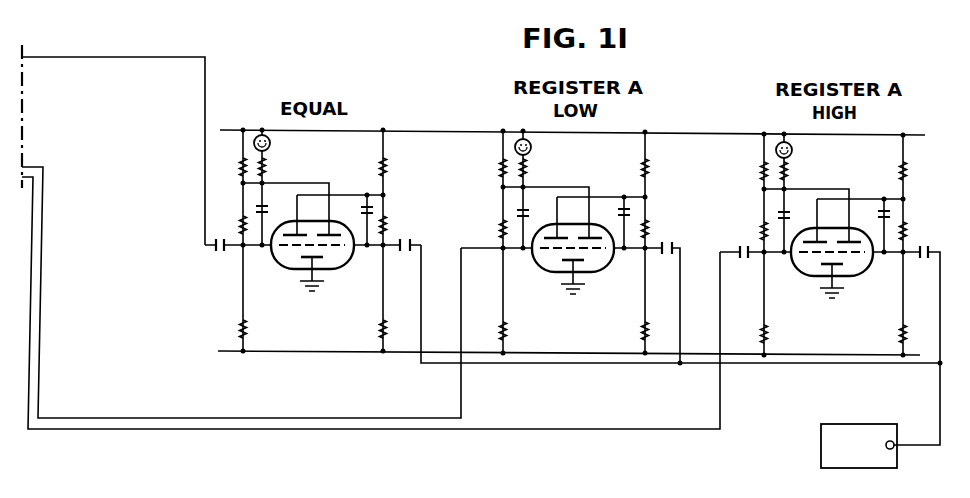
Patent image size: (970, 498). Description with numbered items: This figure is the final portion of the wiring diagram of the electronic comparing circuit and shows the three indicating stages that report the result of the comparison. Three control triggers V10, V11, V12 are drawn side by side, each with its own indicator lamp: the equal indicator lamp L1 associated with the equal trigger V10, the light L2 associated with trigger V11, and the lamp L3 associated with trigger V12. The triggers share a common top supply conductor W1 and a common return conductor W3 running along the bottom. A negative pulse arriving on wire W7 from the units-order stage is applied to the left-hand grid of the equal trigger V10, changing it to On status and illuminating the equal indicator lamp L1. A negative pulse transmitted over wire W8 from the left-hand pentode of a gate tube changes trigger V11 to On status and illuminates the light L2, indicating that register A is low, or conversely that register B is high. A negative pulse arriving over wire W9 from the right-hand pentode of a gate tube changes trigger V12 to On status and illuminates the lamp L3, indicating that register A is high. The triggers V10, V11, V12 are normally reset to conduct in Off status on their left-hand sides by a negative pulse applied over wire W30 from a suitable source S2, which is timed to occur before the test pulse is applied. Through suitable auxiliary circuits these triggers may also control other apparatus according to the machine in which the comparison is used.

The supply conductor (top rail) W1 is at (572, 119).
The common return conductor W3 is at (345, 353).
The wire W7 is at (164, 36).
The wire W8 is at (161, 418).
The wire W9 is at (231, 432).
The wire W30 is at (553, 365).
The equal indicator lamp L1 is at (270, 147).
The light L2 is at (531, 151).
The lamp L3 is at (792, 154).
The equal trigger V10 is at (345, 266).
The trigger V11 is at (606, 269).
The trigger V12 is at (865, 273).
The source S2 is at (863, 457).